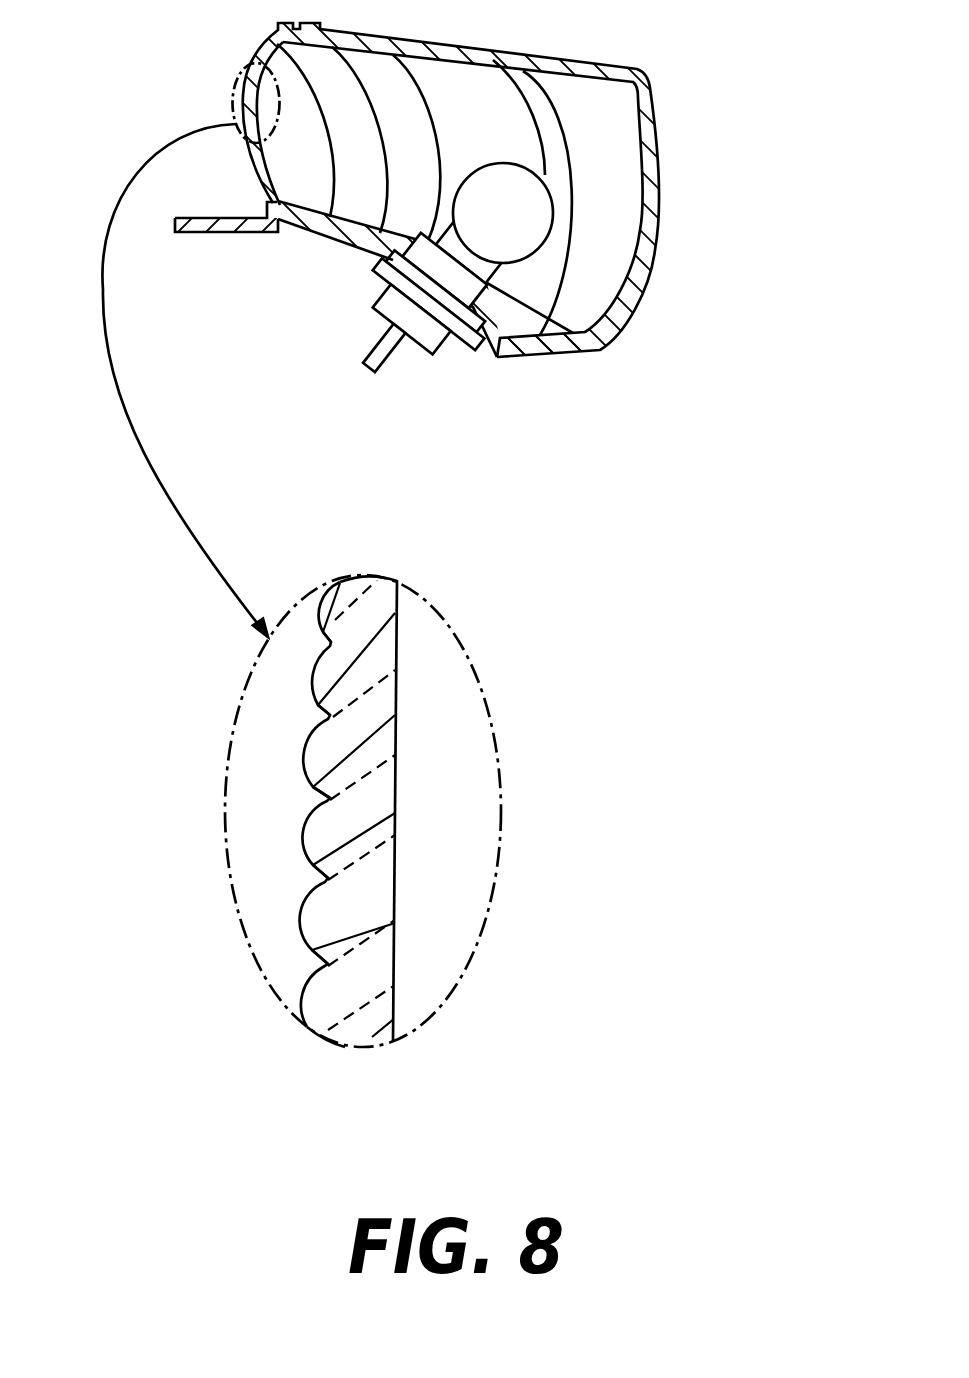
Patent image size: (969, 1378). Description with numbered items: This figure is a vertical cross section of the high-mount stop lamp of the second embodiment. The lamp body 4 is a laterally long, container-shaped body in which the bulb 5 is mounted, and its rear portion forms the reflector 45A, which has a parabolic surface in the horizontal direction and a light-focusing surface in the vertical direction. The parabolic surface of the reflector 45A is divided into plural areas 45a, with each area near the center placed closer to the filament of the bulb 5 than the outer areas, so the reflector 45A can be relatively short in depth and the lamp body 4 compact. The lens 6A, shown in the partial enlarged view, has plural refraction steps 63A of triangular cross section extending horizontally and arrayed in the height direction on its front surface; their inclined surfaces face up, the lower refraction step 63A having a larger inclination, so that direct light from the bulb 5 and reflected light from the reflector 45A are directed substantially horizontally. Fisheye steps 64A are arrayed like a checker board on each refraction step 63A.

The lamp body 4 is at (643, 106).
The reflector 45A is at (647, 152).
The areas 45a is at (468, 61).
The bulb 5 is at (523, 192).
The lens 6A is at (262, 40).
The fisheye steps 64A is at (321, 677).
The refraction steps 63A is at (330, 715).